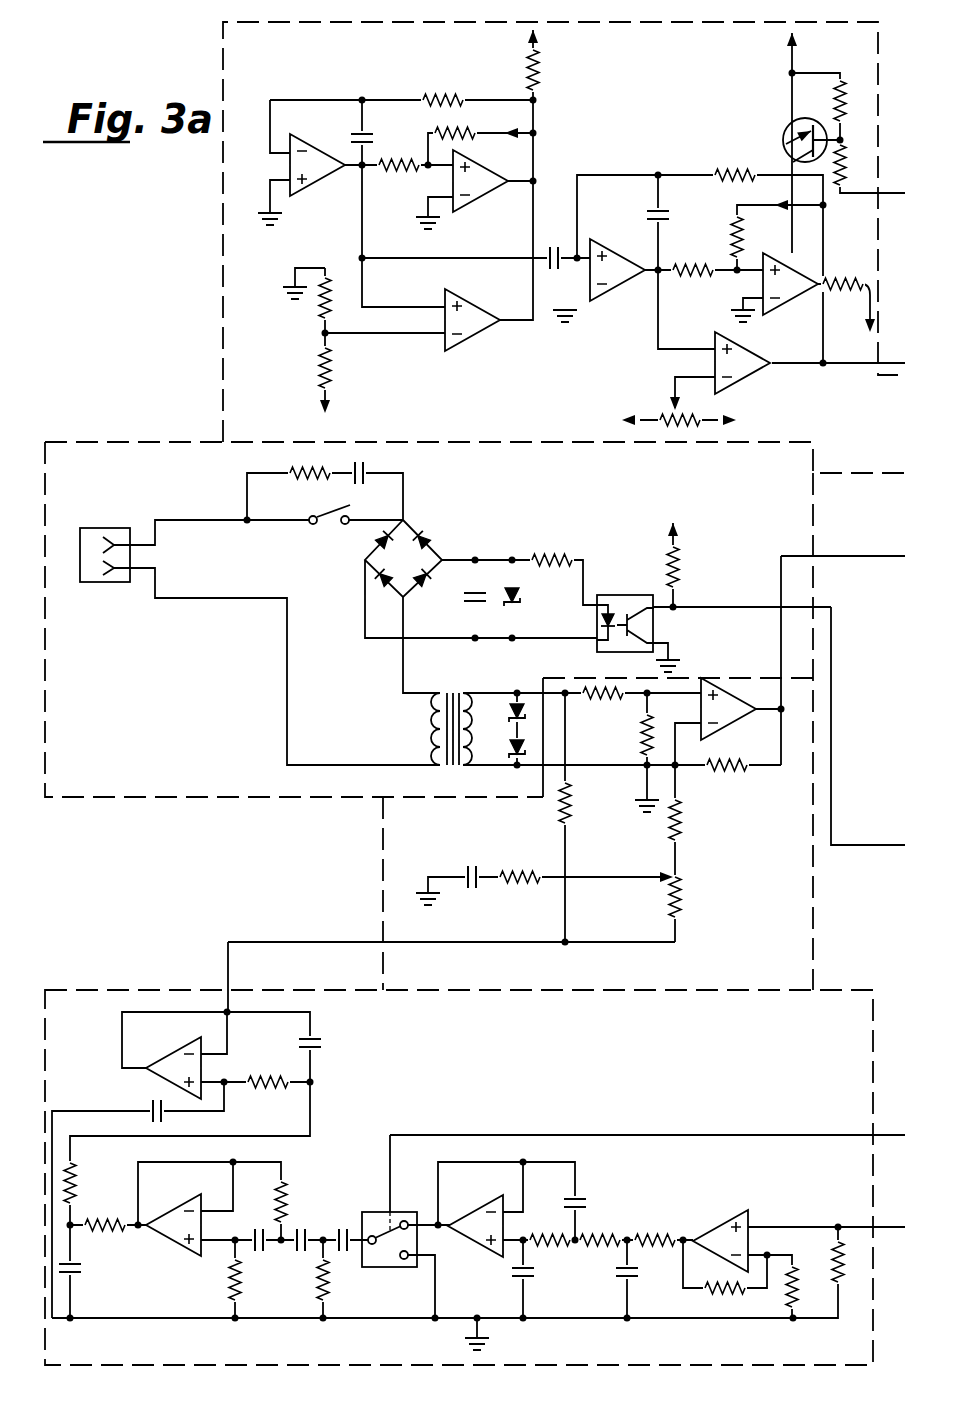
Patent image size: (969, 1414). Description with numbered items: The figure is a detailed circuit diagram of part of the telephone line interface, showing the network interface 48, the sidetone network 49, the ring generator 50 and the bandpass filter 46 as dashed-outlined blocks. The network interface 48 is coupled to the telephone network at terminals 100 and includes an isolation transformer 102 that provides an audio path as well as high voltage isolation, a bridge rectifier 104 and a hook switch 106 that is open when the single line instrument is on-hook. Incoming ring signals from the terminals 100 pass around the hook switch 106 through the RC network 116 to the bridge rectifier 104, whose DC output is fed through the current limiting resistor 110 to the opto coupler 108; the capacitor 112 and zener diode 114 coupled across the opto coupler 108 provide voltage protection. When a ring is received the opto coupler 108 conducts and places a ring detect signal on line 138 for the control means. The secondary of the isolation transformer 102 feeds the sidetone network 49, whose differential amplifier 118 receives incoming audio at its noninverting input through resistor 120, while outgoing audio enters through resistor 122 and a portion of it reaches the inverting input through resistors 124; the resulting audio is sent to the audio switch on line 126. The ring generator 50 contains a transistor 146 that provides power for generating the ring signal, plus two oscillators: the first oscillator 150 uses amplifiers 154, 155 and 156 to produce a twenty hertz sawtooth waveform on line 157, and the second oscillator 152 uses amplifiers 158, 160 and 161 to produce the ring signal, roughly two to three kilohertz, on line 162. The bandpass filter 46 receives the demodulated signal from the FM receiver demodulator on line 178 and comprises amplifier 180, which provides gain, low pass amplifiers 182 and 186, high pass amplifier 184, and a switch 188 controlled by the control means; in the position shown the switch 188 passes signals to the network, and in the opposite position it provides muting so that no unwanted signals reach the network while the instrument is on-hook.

The bandpass filter 46 is at (183, 985).
The network interface 48 is at (137, 437).
The sidetone network 49 is at (380, 857).
The ring generator 50 is at (220, 297).
The terminals 100 is at (118, 578).
The isolation transformer 102 is at (424, 722).
The bridge rectifier 104 is at (430, 547).
The hook switch 106 is at (328, 526).
The opto coupler 108 is at (618, 604).
The current limiting resistor 110 is at (570, 553).
The capacitor 112 is at (466, 600).
The zener diode 114 is at (516, 585).
The RC network 116 is at (305, 482).
The differential amplifier 118 is at (721, 714).
The resistor 120 is at (605, 702).
The resistor 122 is at (573, 806).
The resistors 124 is at (682, 878).
The line 126 is at (847, 556).
The line 138 is at (876, 848).
The transistor 146 is at (787, 130).
The first oscillator 150 is at (403, 92).
The second oscillator 152 is at (691, 156).
The amplifier 154 is at (318, 172).
The amplifier 155 is at (468, 325).
The amplifier 156 is at (483, 183).
The line 157 is at (546, 250).
The amplifier 158 is at (622, 284).
The amplifier 160 is at (790, 296).
The amplifier 161 is at (757, 375).
The line 162 is at (863, 368).
The second line 178 is at (857, 1226).
The amplifier 180 is at (718, 1228).
The amplifier 182 is at (590, 1224).
The amplifier 184 is at (306, 1176).
The amplifier 186 is at (146, 1008).
The switch 188 is at (377, 1214).